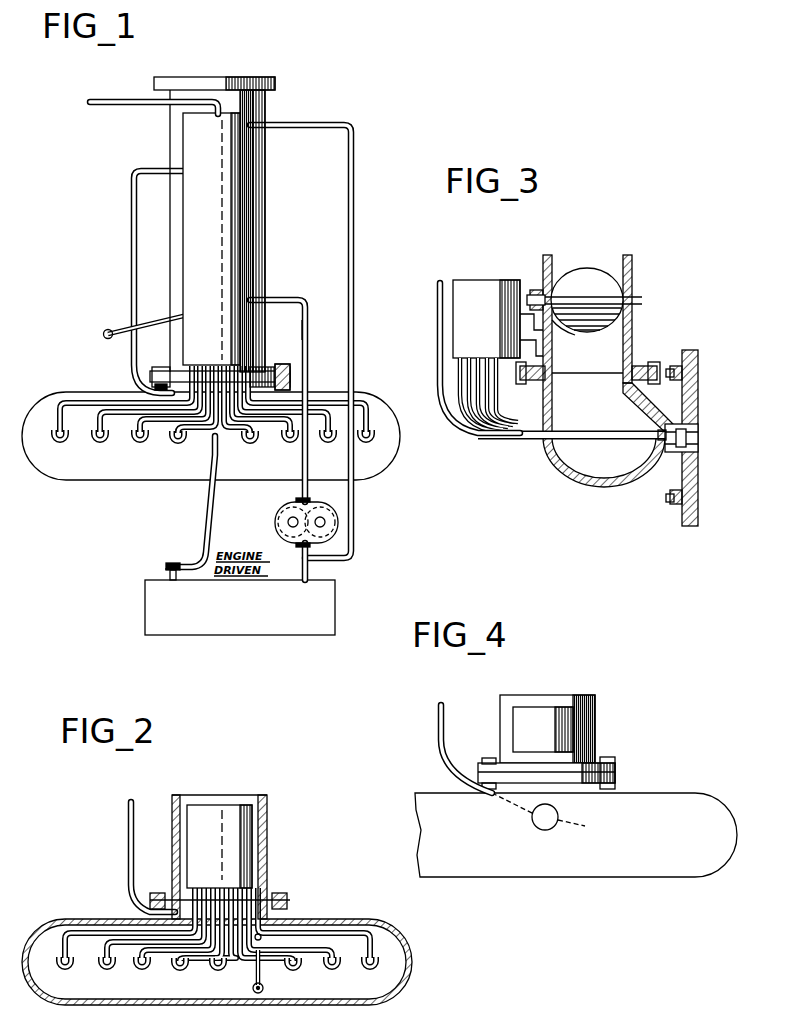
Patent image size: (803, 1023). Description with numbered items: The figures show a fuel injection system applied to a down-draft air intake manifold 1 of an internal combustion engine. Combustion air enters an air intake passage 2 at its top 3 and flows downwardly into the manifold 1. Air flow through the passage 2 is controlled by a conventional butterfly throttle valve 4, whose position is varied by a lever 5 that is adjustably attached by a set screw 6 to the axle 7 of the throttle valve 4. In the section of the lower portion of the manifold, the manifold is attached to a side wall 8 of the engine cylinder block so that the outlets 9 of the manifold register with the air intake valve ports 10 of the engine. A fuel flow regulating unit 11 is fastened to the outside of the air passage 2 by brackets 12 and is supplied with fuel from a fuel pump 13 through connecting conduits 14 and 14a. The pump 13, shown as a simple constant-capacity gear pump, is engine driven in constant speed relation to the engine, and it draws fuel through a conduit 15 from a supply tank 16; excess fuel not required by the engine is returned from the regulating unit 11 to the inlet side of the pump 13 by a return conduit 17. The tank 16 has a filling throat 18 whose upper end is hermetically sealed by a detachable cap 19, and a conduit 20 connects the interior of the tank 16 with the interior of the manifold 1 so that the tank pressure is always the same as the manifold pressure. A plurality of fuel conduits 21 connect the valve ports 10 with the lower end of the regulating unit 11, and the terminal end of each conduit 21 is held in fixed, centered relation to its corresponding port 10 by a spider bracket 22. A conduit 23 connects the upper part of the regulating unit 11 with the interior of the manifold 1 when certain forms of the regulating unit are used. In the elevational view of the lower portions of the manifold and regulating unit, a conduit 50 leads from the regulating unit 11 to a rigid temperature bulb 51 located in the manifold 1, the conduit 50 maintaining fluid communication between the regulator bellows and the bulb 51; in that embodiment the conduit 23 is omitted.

In FIG. 1, the air intake manifold 1 is at (79, 390).
In FIG. 3, the air intake manifold 1 is at (566, 472).
In FIG. 2, the air intake manifold 1 is at (332, 918).
In FIG. 4, the air intake manifold 1 is at (680, 792).
In FIG. 1, the air intake passage 2 is at (268, 218).
In FIG. 3, the air intake passage 2 is at (632, 318).
In FIG. 2, the air intake passage 2 is at (268, 820).
In FIG. 4, the air intake passage 2 is at (596, 718).
In FIG. 1, the top 3 is at (189, 76).
In FIG. 1, the butterfly throttle valve 4 is at (207, 268).
In FIG. 3, the butterfly throttle valve 4 is at (588, 270).
In FIG. 1, the lever 5 is at (146, 326).
In FIG. 3, the lever 5 is at (553, 326).
In FIG. 3, the set screw 6 is at (535, 290).
In FIG. 1, the axle 7 is at (202, 322).
In FIG. 3, the axle 7 is at (635, 300).
In FIG. 3, the side wall 8 is at (698, 402).
In FIG. 3, the outlets 9 is at (686, 446).
In FIG. 3, the air intake valve ports 10 is at (698, 434).
In FIG. 2, the air intake valve ports 10 is at (68, 967).
In FIG. 1, the fuel flow regulating unit 11 is at (214, 200).
In FIG. 3, the fuel flow regulating unit 11 is at (470, 285).
In FIG. 2, the fuel flow regulating unit 11 is at (219, 851).
In FIG. 4, the fuel flow regulating unit 11 is at (538, 739).
In FIG. 3, the brackets 12 is at (520, 349).
In FIG. 1, the fuel pump 13 is at (288, 526).
In FIG. 1, the connecting conduit 14 is at (309, 357).
In FIG. 1, the connecting conduit 14a is at (287, 300).
In FIG. 1, the conduit 15 is at (311, 572).
In FIG. 1, the supply tank 16 is at (246, 618).
In FIG. 1, the return conduit 17 is at (324, 125).
In FIG. 1, the filling throat 18 is at (166, 569).
In FIG. 1, the detachable cap 19 is at (173, 562).
In FIG. 1, the conduit 20 is at (214, 464).
In FIG. 1, the fuel conduits 21 is at (80, 438).
In FIG. 3, the fuel conduits 21 is at (506, 406).
In FIG. 2, the fuel conduits 21 is at (70, 932).
In FIG. 3, the spider bracket 22 is at (662, 443).
In FIG. 2, the spider bracket 22 is at (252, 984).
In FIG. 1, the conduit 23 is at (134, 210).
In FIG. 3, the conduit 23 is at (438, 300).
In FIG. 2, the conduit 23 is at (128, 845).
In FIG. 1, the conduit 50 is at (100, 98).
In FIG. 4, the conduit 50 is at (438, 734).
In FIG. 4, the temperature bulb 51 is at (550, 815).